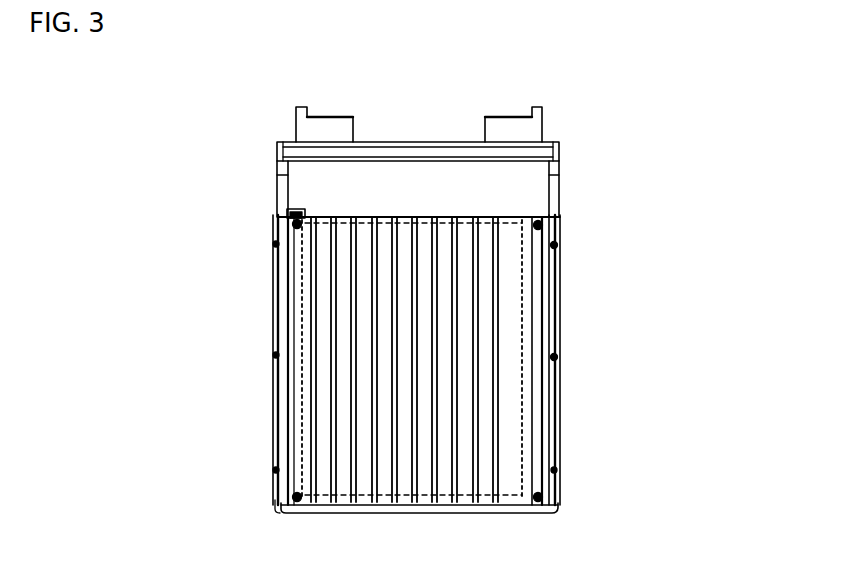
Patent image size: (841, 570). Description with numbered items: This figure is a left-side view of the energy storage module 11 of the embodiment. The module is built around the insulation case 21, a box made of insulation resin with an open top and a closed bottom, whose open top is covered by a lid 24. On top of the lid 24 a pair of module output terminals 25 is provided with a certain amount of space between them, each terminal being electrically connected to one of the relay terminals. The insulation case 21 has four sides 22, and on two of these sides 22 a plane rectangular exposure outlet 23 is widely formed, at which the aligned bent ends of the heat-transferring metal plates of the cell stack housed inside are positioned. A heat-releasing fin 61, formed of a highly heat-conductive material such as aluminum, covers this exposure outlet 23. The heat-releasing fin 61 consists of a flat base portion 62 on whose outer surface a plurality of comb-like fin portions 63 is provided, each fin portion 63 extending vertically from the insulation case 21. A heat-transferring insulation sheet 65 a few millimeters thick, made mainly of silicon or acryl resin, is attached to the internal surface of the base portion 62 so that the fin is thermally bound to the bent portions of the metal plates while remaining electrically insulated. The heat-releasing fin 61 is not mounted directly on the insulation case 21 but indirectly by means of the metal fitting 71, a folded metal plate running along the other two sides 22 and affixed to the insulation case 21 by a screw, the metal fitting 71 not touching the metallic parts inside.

The energy storage module 11 is at (597, 120).
The insulation case 21 is at (565, 176).
The sides 22 is at (277, 182).
The exposure outlet 23 is at (456, 228).
The lid 24 is at (437, 148).
The module output terminal 25 is at (333, 120).
The heat-releasing fin 61 is at (507, 505).
The base portion 62 is at (520, 443).
The fin portion 63 is at (335, 443).
The heat-transferring insulation sheet 65 is at (350, 217).
The metal fitting 71 is at (276, 323).